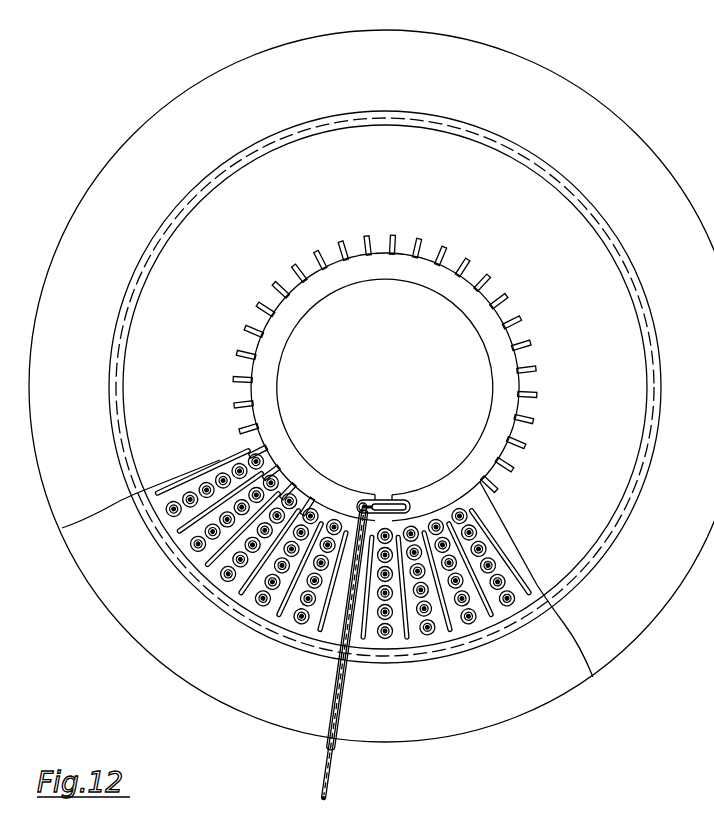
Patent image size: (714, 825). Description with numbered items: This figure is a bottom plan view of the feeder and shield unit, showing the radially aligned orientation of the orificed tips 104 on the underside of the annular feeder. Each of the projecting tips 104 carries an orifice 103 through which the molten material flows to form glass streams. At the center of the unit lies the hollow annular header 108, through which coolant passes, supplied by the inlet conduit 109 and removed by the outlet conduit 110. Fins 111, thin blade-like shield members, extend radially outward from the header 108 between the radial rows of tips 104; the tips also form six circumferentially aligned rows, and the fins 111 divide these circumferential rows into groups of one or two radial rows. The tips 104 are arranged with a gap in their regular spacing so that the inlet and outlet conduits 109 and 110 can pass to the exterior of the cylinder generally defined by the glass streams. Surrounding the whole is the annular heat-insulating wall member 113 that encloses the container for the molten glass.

The orifices 103 is at (543, 582).
The projecting tips 104 is at (207, 486).
The annular header 108 is at (473, 308).
The inlet conduit 109 is at (324, 779).
The outlet conduit 110 is at (322, 731).
The fins 111 is at (192, 577).
The annular wall member 113 is at (128, 610).